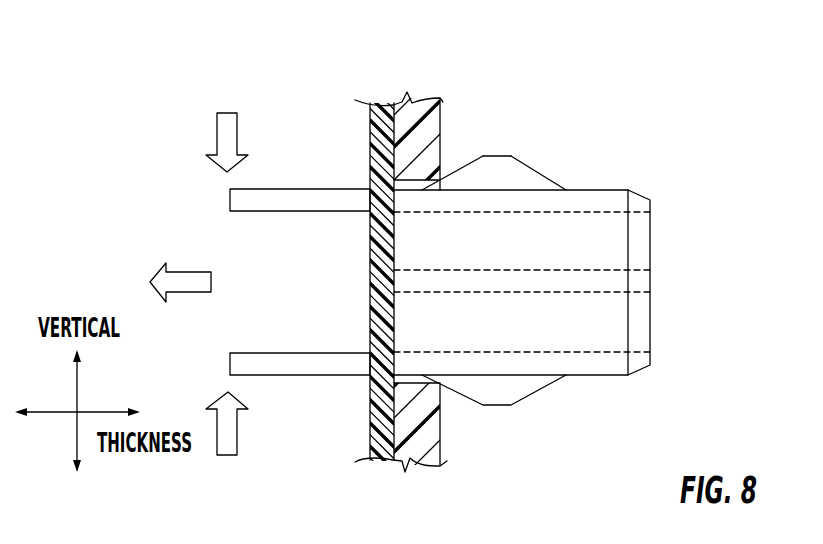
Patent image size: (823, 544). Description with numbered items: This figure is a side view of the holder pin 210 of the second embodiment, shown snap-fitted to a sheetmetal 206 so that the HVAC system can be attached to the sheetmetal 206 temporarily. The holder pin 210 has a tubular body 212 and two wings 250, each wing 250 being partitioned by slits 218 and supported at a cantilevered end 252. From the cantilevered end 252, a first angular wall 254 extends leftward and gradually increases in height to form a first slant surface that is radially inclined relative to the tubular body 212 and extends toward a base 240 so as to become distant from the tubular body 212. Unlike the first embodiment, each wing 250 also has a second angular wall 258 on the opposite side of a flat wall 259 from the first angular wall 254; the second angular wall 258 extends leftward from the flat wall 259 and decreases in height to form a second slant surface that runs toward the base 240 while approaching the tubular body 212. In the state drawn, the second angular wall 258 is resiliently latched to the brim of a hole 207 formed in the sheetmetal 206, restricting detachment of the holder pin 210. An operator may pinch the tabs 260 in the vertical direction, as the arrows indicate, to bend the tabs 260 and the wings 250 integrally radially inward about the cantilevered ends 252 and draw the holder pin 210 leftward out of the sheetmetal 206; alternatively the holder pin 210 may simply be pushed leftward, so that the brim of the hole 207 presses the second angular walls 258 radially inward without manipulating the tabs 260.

The holder pin 210 is at (669, 77).
The hole 207 is at (370, 180).
The sheetmetal 206 is at (441, 420).
The tabs 260 is at (241, 198).
The base 240 is at (375, 380).
The slits 218 is at (447, 360).
The wings 250 is at (538, 422).
The cantilevered end 252 is at (566, 203).
The tubular body 212 is at (606, 368).
The first angular wall 254 is at (540, 172).
The second angular wall 258 is at (461, 167).
The flat wall 259 is at (500, 156).